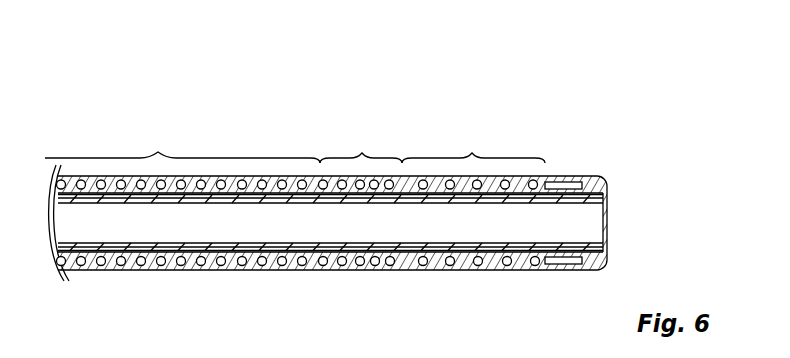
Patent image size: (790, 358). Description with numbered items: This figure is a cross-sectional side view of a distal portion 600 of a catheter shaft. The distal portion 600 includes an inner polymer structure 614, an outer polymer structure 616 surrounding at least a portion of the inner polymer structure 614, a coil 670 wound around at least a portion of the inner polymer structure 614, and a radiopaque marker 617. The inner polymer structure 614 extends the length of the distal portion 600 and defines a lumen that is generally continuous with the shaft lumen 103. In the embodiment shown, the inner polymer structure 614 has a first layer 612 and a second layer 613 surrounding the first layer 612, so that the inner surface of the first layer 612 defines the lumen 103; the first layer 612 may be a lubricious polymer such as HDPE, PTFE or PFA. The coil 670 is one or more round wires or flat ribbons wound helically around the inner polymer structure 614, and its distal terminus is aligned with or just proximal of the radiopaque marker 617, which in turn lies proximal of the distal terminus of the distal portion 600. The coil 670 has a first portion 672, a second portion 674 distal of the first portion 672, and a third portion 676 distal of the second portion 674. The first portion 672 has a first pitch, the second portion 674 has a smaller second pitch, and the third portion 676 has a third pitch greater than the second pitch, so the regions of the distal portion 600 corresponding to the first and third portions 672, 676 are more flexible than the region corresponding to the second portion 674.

The distal portion 600 is at (54, 90).
The lumen 103 is at (340, 233).
The first layer 612 is at (137, 204).
The second layer 613 is at (185, 194).
The inner polymer structure 614 is at (613, 188).
The outer polymer structure 616 is at (307, 270).
The radiopaque marker 617 is at (562, 182).
The coil 670 is at (445, 270).
The first portion 672 is at (182, 147).
The second portion 674 is at (361, 147).
The third portion 676 is at (473, 147).